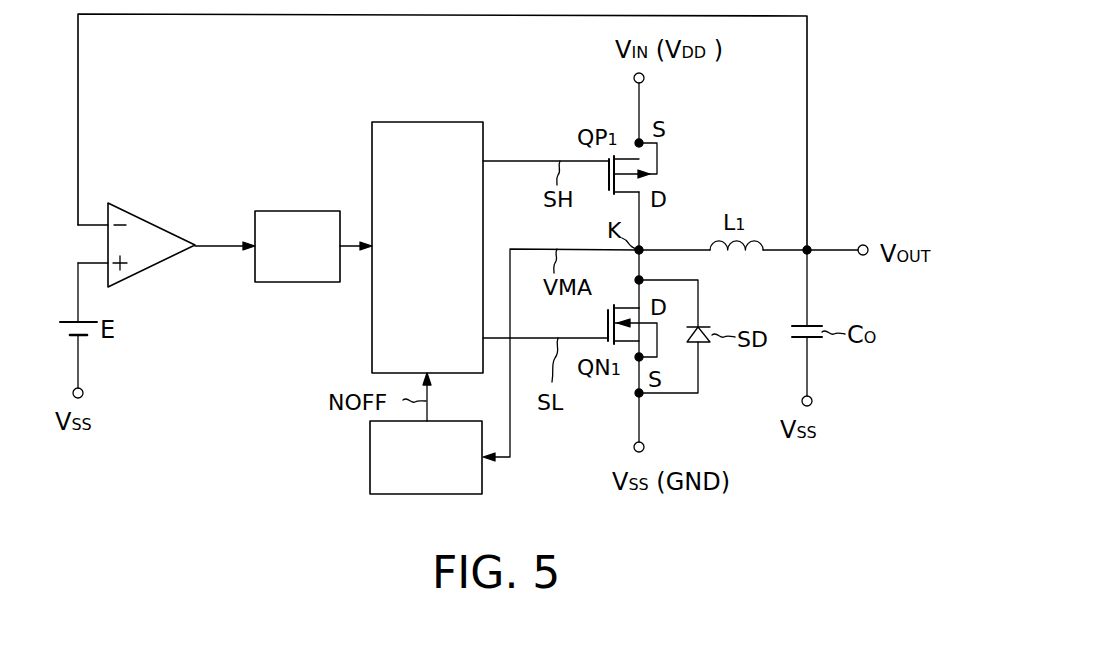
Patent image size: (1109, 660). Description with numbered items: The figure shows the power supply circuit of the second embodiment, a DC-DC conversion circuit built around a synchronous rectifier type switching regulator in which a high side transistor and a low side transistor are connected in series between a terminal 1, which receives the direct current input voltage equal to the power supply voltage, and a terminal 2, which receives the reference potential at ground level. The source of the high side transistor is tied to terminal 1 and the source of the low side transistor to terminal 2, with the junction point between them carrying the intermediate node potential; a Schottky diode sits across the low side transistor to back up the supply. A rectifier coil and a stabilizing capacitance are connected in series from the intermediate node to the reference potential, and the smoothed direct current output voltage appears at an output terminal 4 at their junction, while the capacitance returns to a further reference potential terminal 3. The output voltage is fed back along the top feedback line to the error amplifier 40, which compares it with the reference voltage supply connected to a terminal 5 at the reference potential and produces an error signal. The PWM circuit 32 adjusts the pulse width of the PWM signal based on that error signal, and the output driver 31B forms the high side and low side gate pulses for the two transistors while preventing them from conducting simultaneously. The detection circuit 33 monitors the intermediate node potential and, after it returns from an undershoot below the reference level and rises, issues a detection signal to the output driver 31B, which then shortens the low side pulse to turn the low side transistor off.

The terminal 1 is at (645, 78).
The terminal 2 is at (645, 447).
The ground terminal for output capacitor 3 is at (813, 402).
The output terminal 4 is at (863, 245).
The terminal 5 is at (84, 394).
The output driver 31B is at (430, 122).
The PWM circuit 32 is at (298, 211).
The detection circuit 33 is at (370, 458).
The error amplifier 40 is at (152, 220).